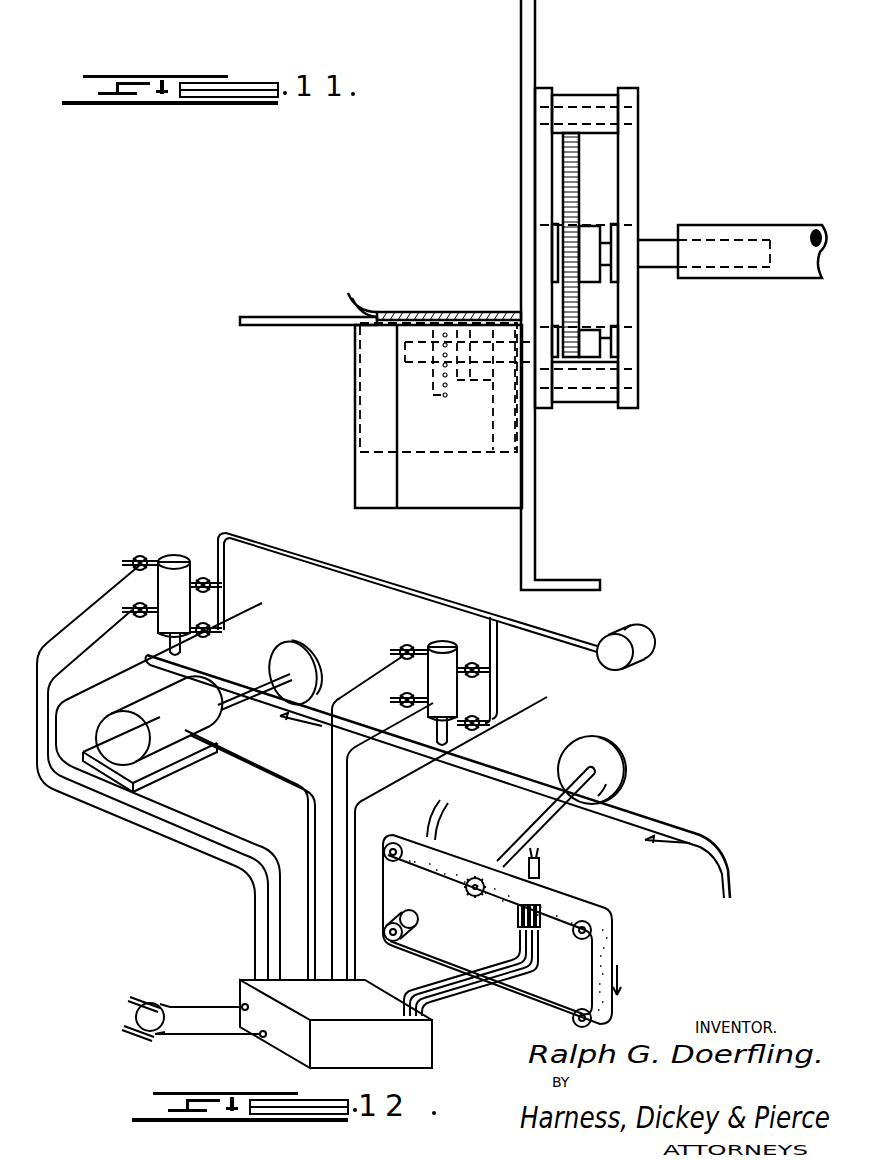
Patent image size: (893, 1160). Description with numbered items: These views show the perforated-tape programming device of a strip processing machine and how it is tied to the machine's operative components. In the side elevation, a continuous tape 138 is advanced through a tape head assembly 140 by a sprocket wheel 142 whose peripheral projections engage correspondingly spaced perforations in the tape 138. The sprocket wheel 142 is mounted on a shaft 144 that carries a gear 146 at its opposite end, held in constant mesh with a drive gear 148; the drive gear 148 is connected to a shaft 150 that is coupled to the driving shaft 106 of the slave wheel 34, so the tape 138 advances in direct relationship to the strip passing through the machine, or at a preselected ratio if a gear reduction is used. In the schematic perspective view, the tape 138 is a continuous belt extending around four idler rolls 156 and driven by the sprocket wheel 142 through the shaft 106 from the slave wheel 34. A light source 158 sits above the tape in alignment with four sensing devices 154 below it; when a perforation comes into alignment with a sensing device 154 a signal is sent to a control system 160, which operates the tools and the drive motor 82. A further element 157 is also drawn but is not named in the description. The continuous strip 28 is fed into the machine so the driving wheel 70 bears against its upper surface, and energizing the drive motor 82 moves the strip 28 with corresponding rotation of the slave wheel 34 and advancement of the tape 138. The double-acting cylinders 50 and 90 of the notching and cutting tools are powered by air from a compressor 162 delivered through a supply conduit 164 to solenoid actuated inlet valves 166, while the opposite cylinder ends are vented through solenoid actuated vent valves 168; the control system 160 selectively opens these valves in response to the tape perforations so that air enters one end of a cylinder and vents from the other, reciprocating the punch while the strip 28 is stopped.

In FIG. 12, the continuous strip 28 is at (672, 830).
In FIG. 12, the slave wheel 34 is at (612, 760).
In FIG. 12, the double-acting cylinder 50 is at (440, 645).
In FIG. 12, the driving wheel 70 is at (300, 655).
In FIG. 12, the drive motor 82 is at (170, 765).
In FIG. 12, the double-acting cylinder 90 is at (170, 560).
In FIG. 11, the driving shaft 106 is at (742, 228).
In FIG. 12, the driving shaft 106 is at (546, 830).
In FIG. 11, the continuous tape 138 is at (407, 310).
In FIG. 12, the continuous tape 138 is at (558, 888).
In FIG. 11, the tape head assembly 140 is at (341, 383).
In FIG. 11, the sprocket wheel 142 is at (442, 400).
In FIG. 12, the sprocket wheel 142 is at (464, 893).
In FIG. 11, the shaft 144 is at (400, 351).
In FIG. 11, the gear 146 is at (577, 353).
In FIG. 11, the drive gear 148 is at (575, 302).
In FIG. 11, the shaft 150 is at (650, 243).
In FIG. 12, the sensing devices 154 is at (516, 928).
In FIG. 12, the idler rolls 156 is at (400, 860).
In FIG. 12, the tube 157 is at (451, 809).
In FIG. 12, the light source 158 is at (541, 863).
In FIG. 12, the control system 160 is at (410, 1040).
In FIG. 12, the compressor 162 is at (648, 659).
In FIG. 12, the supply conduit 164 is at (426, 592).
In FIG. 12, the solenoid actuated inlet valves 166 is at (212, 584).
In FIG. 12, the solenoid actuated vent valves 168 is at (132, 606).